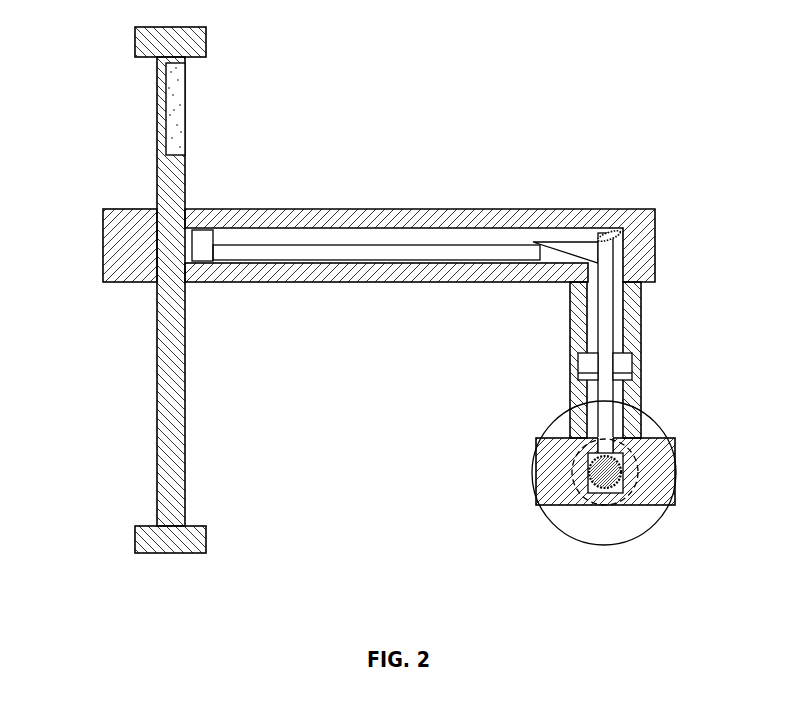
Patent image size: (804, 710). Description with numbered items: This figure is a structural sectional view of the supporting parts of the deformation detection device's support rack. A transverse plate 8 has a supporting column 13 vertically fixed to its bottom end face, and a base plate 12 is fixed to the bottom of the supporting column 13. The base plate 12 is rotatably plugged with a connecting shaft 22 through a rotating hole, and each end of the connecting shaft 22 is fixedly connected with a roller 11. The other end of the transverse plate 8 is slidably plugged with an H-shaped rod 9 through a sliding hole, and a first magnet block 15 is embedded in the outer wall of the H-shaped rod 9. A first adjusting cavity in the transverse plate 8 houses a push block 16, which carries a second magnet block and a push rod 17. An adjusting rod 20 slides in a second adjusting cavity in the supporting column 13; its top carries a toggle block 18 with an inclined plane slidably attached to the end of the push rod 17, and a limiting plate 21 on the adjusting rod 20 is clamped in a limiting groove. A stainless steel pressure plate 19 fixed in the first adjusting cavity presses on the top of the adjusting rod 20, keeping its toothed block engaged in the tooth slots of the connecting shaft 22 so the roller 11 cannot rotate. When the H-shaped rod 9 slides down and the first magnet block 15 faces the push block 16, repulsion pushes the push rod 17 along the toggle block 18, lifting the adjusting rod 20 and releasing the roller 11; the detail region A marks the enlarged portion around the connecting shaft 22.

The transverse plate 8 is at (317, 283).
The H-shaped rod 9 is at (168, 477).
The roller 11 is at (567, 515).
The base plate 12 is at (653, 448).
The supporting column 13 is at (633, 322).
The first magnet block 15 is at (175, 122).
The push block 16 is at (202, 238).
The push rod 17 is at (490, 253).
The toggle block 18 is at (586, 250).
The stainless steel pressure plate 19 is at (612, 236).
The adjusting rod 20 is at (610, 260).
The limiting plate 21 is at (630, 377).
The connecting shaft 22 is at (602, 470).
The detail region A is at (605, 508).